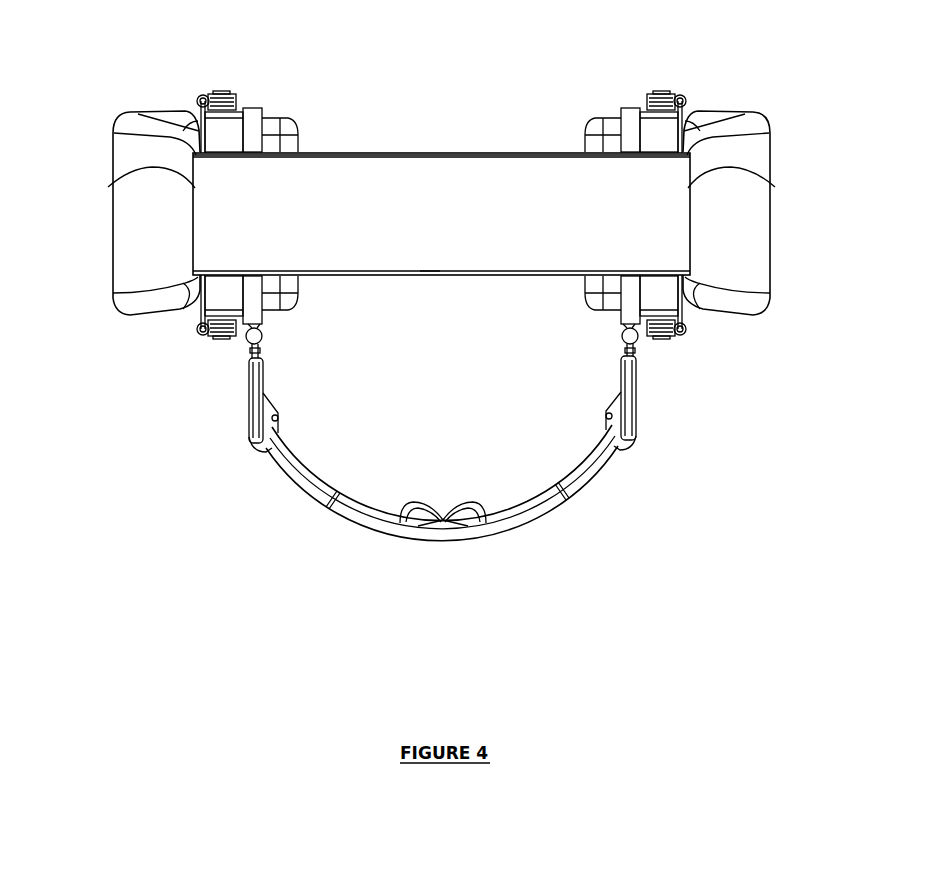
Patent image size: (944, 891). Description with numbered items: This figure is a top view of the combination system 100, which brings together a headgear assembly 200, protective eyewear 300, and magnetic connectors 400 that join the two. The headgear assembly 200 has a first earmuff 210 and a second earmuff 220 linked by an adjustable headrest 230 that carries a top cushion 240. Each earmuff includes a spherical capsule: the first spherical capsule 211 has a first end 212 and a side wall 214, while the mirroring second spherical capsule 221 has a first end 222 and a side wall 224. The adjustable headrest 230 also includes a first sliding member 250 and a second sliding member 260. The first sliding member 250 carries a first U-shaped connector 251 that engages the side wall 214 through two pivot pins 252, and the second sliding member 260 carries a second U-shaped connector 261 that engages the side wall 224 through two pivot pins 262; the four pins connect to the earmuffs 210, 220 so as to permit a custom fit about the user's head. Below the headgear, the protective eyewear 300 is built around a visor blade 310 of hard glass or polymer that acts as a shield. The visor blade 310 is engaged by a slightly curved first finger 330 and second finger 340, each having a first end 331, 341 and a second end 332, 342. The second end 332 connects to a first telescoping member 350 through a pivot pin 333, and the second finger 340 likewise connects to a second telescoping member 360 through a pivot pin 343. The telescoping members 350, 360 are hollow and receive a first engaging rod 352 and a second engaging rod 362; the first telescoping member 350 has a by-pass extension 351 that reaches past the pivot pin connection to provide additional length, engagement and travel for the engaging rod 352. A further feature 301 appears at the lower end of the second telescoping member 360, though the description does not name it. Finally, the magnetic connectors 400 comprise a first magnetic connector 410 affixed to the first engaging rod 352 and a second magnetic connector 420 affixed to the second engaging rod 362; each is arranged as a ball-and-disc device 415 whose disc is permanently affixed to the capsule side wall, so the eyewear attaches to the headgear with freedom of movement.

The combination system 100 is at (355, 175).
The headgear assembly 200 is at (716, 252).
The first earmuff 210 is at (765, 213).
The first spherical capsule 211 is at (760, 278).
The first end 212 is at (770, 258).
The side wall 214 is at (703, 340).
The second earmuff 220 is at (156, 246).
The second spherical capsule 221 is at (110, 268).
The first end 222 is at (125, 175).
The side wall 224 is at (178, 320).
The adjustable headrest 230 is at (460, 178).
The top cushion 240 is at (428, 275).
The first sliding member 250 is at (719, 206).
The first U-shaped connector 251 is at (690, 122).
The pivot pins 252 is at (660, 92).
The second sliding member 260 is at (177, 205).
The second U-shaped connector 261 is at (200, 118).
The pivot pins 262 is at (230, 92).
The protective eyewear 300 is at (441, 473).
The left arm end 301 is at (262, 447).
The visor blade 310 is at (442, 507).
The first finger 330 is at (578, 492).
The first end 331 is at (555, 497).
The second end 332 is at (604, 421).
The pivot pin 333 is at (607, 418).
The second finger 340 is at (313, 497).
The first end 341 is at (330, 486).
The second end 342 is at (280, 432).
The pivot pin 343 is at (282, 412).
The first telescoping member 350 is at (590, 423).
The by-pass extension 351 is at (636, 442).
The first engaging rod 352 is at (640, 355).
The second telescoping member 360 is at (284, 431).
The second engaging rod 362 is at (266, 350).
The magnetic connectors 400 is at (600, 380).
The first magnetic connector 410 is at (605, 337).
The ball-and-disc device 415 is at (607, 331).
The second magnetic connector 420 is at (303, 329).